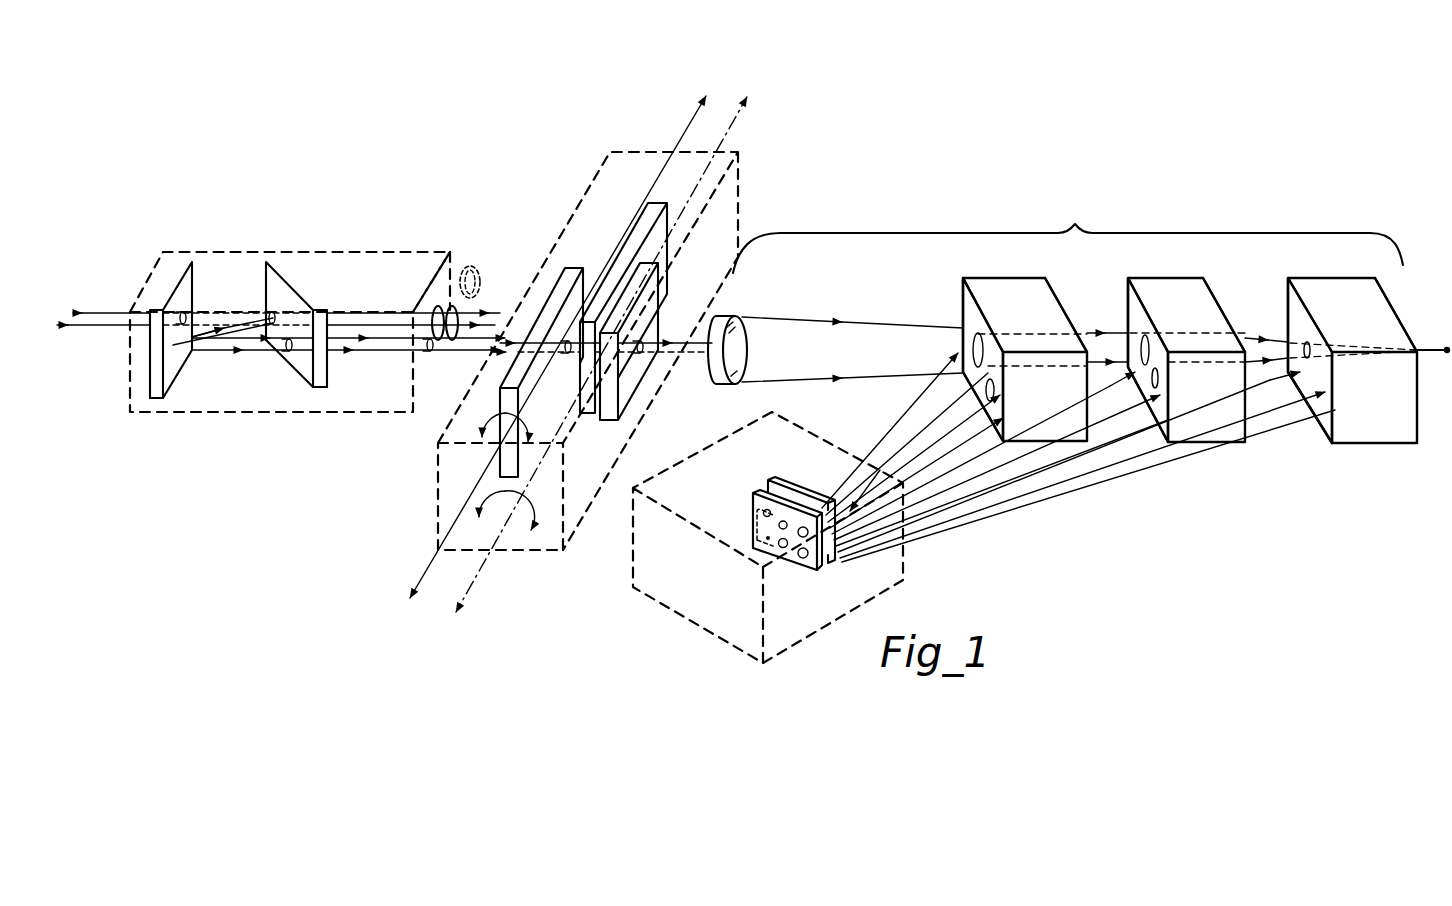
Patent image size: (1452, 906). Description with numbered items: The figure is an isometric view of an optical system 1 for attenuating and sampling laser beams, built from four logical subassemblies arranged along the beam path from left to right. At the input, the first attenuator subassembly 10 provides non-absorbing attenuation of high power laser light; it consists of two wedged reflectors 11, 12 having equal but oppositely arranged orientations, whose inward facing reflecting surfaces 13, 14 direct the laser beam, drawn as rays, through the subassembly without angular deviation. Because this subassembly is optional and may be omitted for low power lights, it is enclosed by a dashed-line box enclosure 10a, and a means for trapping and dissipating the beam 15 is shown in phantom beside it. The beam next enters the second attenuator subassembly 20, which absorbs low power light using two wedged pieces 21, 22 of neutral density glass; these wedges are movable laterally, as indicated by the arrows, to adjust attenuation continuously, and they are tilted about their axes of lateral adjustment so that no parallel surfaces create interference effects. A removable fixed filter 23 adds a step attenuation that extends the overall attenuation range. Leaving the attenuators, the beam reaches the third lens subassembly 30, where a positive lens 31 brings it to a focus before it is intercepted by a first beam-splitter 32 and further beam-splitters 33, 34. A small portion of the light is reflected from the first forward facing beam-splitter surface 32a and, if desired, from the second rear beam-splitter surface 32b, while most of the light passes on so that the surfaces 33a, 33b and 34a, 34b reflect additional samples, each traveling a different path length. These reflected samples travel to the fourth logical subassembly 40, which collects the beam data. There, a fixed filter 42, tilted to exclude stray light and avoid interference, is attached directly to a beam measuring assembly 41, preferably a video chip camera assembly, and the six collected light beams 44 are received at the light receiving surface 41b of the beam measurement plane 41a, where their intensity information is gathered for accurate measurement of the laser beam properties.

The optical system 1 is at (783, 110).
The first attenuator subassembly 10 is at (224, 252).
The dashed-line box enclosure 10a is at (328, 254).
The wedged reflector 11 is at (163, 378).
The wedged reflector 12 is at (318, 377).
The reflecting surface 13 is at (188, 286).
The reflecting surface 14 is at (286, 297).
The means for trapping and dissipating the beam 15 is at (478, 272).
The second attenuator subassembly 20 is at (568, 202).
The wedged piece 21 is at (566, 271).
The wedged piece 22 is at (643, 220).
The removable fixed filter 23 is at (660, 292).
The third lens subassembly 30 is at (1079, 321).
The positive lens 31 is at (722, 318).
The first beam-splitter 32 is at (995, 342).
The first forward facing beam-splitter surface 32a is at (966, 308).
The second rear beam-splitter surface 32b is at (1050, 313).
The beam-splitter 33 is at (1156, 343).
The beam-splitter surface 33a is at (1127, 313).
The beam-splitter surface 33b is at (1207, 316).
The beam-splitter 34 is at (1331, 343).
The beam-splitter surface 34a is at (1287, 316).
The beam-splitter surface 34b is at (1386, 331).
The fourth logical subassembly 40 is at (913, 549).
The beam measuring assembly 41 is at (793, 558).
The beam measurement plane 41a is at (823, 560).
The light receiving surface 41b is at (772, 549).
The fixed filter 42 is at (838, 549).
The collected light beams 44 is at (757, 527).